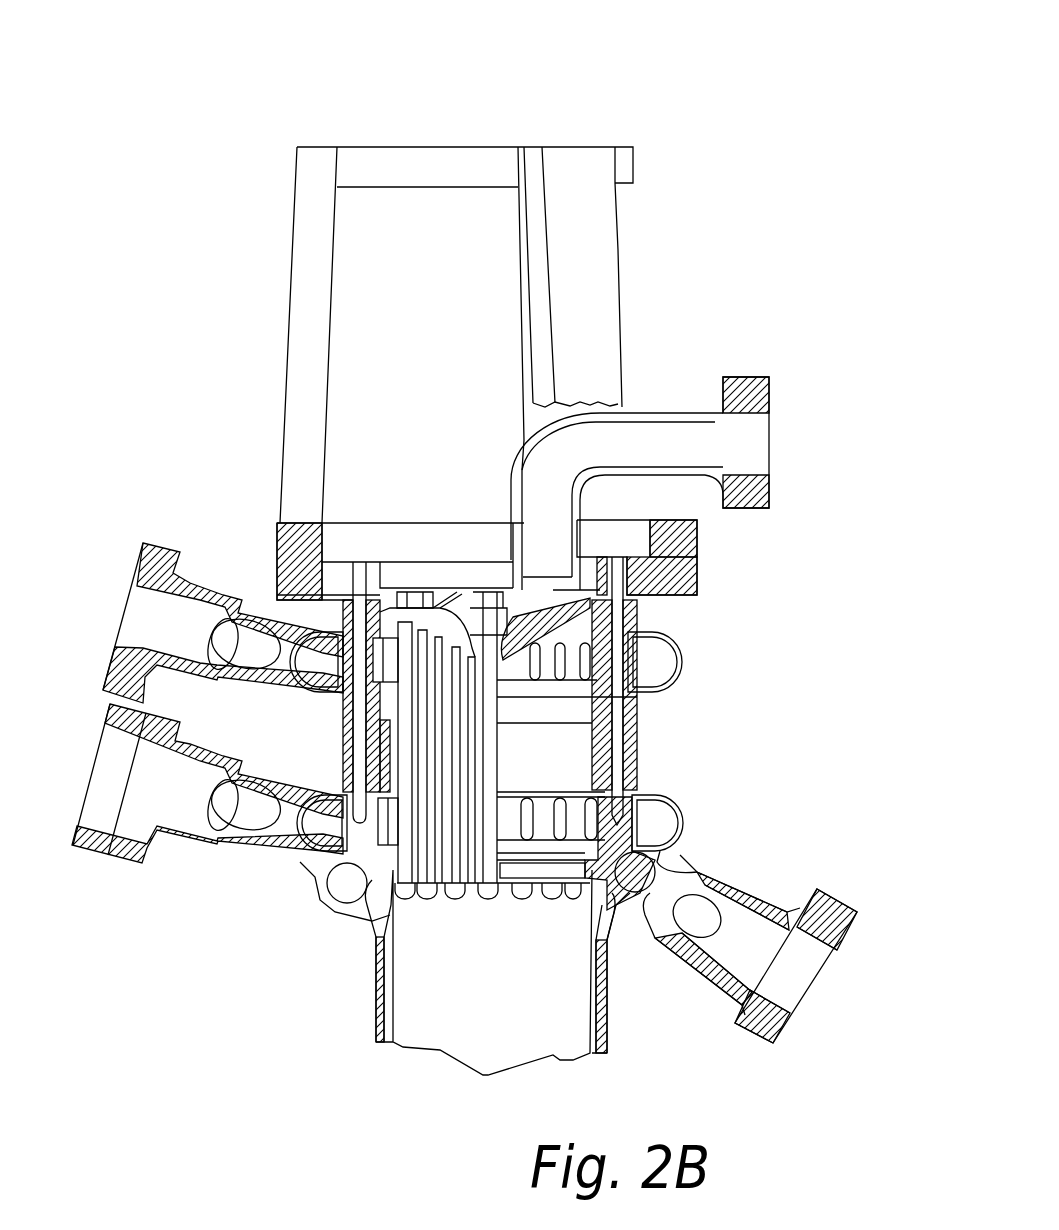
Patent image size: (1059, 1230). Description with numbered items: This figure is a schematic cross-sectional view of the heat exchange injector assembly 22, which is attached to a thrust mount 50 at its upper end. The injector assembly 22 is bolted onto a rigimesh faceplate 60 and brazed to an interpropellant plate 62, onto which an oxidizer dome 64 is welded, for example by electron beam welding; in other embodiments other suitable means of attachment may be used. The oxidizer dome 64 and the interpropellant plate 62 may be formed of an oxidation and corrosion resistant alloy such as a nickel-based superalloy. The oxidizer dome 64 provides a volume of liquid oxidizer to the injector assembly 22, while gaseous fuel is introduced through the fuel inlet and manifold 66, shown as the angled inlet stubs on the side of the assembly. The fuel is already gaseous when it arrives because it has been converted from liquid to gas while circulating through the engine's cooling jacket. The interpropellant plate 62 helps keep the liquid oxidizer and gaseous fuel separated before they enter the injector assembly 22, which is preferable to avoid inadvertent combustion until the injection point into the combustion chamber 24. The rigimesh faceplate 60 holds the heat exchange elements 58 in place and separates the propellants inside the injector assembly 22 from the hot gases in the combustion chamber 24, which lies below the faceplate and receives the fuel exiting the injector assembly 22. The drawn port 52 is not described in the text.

The injector assembly 22 is at (651, 118).
The thrust mount 50 is at (618, 249).
The supply port 52 is at (768, 386).
The combustion chamber 24 is at (530, 999).
The heat exchange elements 58 is at (412, 848).
The rigimesh faceplate 60 is at (466, 850).
The interpropellant plate 62 is at (605, 697).
The oxidizer dome 64 is at (545, 620).
The fuel inlet and manifold 66 is at (140, 555).